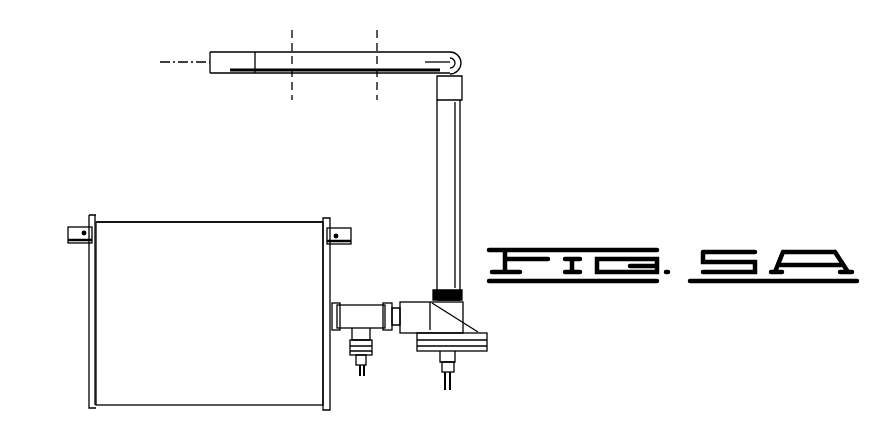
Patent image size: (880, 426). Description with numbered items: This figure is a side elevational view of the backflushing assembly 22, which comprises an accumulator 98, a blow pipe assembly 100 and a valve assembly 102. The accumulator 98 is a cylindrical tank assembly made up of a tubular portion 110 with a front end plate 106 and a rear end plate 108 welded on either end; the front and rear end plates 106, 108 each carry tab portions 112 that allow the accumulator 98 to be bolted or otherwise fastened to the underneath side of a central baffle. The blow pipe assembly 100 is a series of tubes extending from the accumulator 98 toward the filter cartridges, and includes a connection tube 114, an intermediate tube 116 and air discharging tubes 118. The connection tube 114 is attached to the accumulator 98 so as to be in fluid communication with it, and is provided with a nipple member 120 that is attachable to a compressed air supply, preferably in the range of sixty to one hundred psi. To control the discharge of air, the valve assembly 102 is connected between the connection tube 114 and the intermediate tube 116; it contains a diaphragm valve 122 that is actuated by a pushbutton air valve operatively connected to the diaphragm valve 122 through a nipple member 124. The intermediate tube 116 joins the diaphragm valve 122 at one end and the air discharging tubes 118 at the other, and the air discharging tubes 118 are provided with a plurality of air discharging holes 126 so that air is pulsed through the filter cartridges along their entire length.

The backflushing assembly 22 is at (465, 82).
The accumulator 98 is at (153, 222).
The blow pipe assembly 100 is at (465, 152).
The valve assembly 102 is at (492, 330).
The front end plate 106 is at (90, 283).
The rear end plate 108 is at (331, 268).
The tubular portion 110 is at (224, 221).
The tab portions 112 is at (72, 227).
The connection tube 114 is at (352, 302).
The intermediate tube 116 is at (462, 222).
The air discharging tubes 118 is at (410, 52).
The nipple member 120 is at (362, 373).
The diaphragm valve 122 is at (470, 350).
The nipple member 124 is at (452, 387).
The air discharging holes 126 is at (170, 62).